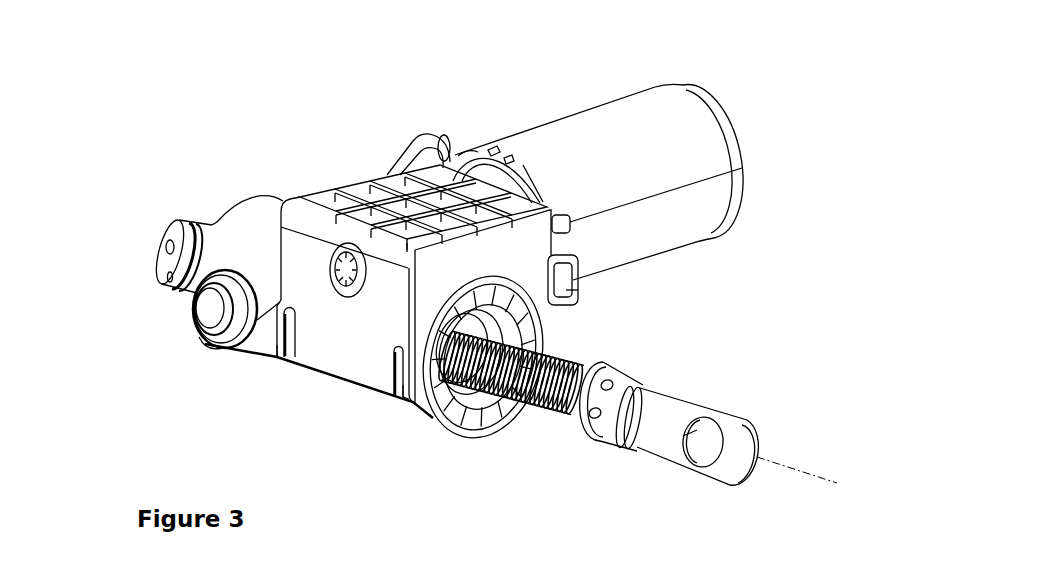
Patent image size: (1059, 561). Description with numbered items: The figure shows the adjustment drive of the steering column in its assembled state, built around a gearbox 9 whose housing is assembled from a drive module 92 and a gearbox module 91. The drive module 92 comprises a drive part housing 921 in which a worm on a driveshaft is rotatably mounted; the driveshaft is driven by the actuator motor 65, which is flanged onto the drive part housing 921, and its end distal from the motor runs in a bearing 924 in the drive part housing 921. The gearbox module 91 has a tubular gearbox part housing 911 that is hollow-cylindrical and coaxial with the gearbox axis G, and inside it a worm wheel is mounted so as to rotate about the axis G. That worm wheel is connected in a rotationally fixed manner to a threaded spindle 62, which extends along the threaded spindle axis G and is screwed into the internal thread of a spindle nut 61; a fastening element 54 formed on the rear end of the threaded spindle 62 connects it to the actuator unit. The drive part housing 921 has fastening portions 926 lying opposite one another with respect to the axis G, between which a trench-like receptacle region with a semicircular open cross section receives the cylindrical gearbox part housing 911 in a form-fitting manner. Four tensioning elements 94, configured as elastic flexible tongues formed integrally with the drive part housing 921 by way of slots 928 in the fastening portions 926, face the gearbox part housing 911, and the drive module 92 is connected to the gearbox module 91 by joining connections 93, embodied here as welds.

The gearbox 9 is at (419, 60).
The actuator motor 65 is at (685, 126).
The gearbox part housing 911 is at (243, 247).
The drive part housing 921 is at (303, 227).
The drive module 92 is at (378, 308).
The bearing 924 is at (353, 260).
The tensioning elements 94 is at (275, 348).
The slots 928 is at (288, 362).
The fastening portions 926 is at (345, 353).
The joining connections 93 is at (545, 342).
The spindle nut 61 is at (520, 311).
The threaded spindle 62 is at (580, 367).
The fastening element 54 is at (677, 408).
The gearbox module 91 is at (482, 455).
The threaded spindle axis G is at (823, 480).